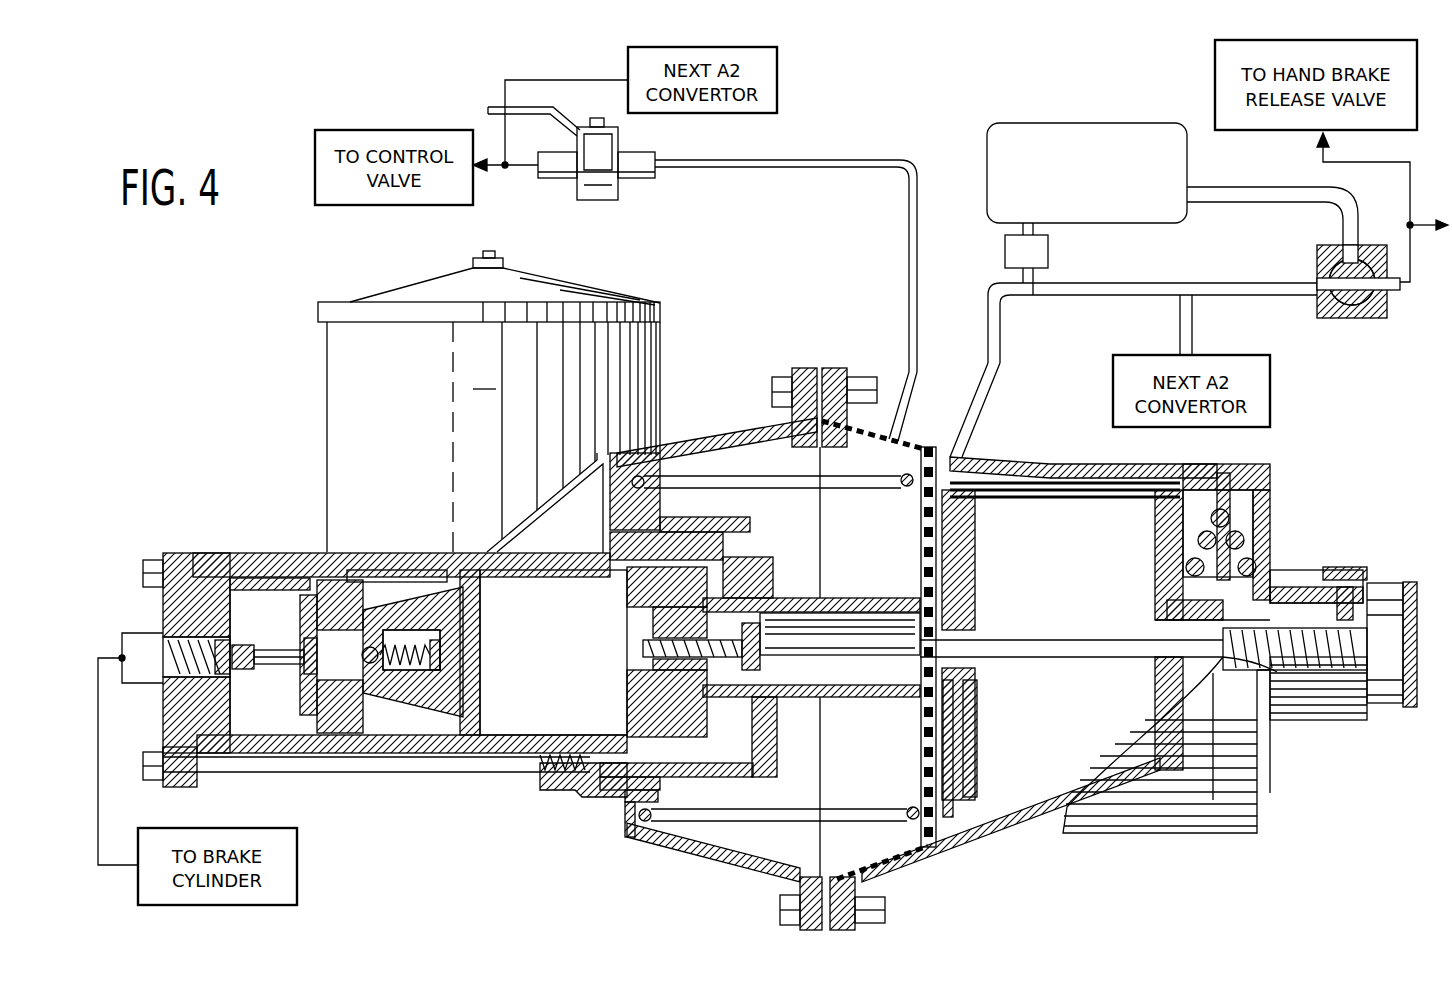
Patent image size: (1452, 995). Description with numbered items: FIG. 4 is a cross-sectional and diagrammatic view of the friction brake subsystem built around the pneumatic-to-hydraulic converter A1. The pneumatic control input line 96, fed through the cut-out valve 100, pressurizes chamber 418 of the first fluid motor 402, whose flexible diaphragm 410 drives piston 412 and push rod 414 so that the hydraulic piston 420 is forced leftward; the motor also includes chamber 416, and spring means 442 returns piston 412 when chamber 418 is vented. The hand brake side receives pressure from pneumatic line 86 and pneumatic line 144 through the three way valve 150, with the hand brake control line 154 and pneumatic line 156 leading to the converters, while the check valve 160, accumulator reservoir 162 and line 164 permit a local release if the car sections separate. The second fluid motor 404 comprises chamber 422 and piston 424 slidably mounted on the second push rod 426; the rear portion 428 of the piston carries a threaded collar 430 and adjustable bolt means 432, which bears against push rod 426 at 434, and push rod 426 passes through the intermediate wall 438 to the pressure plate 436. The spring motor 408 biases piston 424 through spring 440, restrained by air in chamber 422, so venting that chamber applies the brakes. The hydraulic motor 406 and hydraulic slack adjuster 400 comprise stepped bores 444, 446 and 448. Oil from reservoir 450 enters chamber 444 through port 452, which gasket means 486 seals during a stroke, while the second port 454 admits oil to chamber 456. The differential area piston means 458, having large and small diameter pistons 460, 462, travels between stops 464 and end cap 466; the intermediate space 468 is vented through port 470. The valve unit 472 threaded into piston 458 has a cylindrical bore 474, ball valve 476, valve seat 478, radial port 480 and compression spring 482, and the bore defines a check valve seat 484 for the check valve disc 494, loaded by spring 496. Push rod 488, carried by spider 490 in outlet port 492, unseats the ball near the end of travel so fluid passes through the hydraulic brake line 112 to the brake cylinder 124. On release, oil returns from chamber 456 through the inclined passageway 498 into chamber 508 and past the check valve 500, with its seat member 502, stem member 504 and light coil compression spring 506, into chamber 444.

The pneumatic line 86 is at (1322, 150).
The pneumatic control input line 96 is at (505, 162).
The cut-out valve 100 is at (618, 192).
The hydraulic brake line 112 is at (98, 835).
The brake cylinder 124 is at (326, 835).
The pneumatic line 144 is at (1432, 212).
The three way valve 150 is at (1317, 258).
The hand brake control line 154 is at (1000, 352).
The pneumatic line 156 is at (1180, 320).
The check valve 160 is at (1048, 256).
The accumulator reservoir 162 is at (1037, 130).
The line 164 is at (1235, 175).
The hydraulic slack adjuster 400 is at (253, 538).
The first fluid motor 402 is at (950, 543).
The second fluid motor 404 is at (1108, 453).
The hydraulic motor 406 is at (514, 740).
The spring motor 408 is at (1205, 476).
The flexible diaphragm 410 is at (903, 443).
The piston 412 is at (920, 531).
The push rod 414 is at (895, 605).
The chamber 416 is at (872, 771).
The chamber 418 is at (975, 800).
The hydraulic piston 420 is at (762, 662).
The chamber 422 is at (1128, 571).
The piston 424 is at (1176, 517).
The second push rod 426 is at (1125, 640).
The rear portion 428 is at (1294, 580).
The threaded collar 430 is at (1384, 593).
The adjustable bolt means 432 is at (1378, 705).
The bearing point 434 is at (1262, 720).
The pressure plate 436 is at (960, 600).
The intermediate wall 438 is at (973, 732).
The spring 440 is at (1262, 520).
The spring means 442 is at (800, 492).
The first hydraulic chamber 444 is at (557, 682).
The chamber 446 is at (470, 648).
The chamber 448 is at (240, 712).
The reservoir 450 is at (722, 304).
The port 452 is at (606, 548).
The second port 454 is at (746, 570).
The chamber 456 is at (760, 720).
The differential area reciprocal piston means 458 is at (386, 536).
The large diameter piston 460 is at (456, 536).
The small diameter piston 462 is at (312, 727).
The stops 464 is at (480, 604).
The end cap 466 is at (168, 725).
The intermediate space 468 is at (432, 735).
The port 470 is at (350, 725).
The valve unit 472 is at (325, 625).
The cylindrical bore 474 is at (318, 622).
The ball valve 476 is at (432, 641).
The valve seat 478 is at (366, 665).
The radial port 480 is at (396, 642).
The compression spring 482 is at (418, 672).
The check valve seat 484 is at (302, 672).
The gasket means 486 is at (626, 590).
The push rod 488 is at (247, 672).
The spider 490 is at (224, 622).
The outlet port 492 is at (217, 603).
The check valve disc 494 is at (232, 640).
The spring 496 is at (215, 698).
The inclined passageway 498 is at (626, 617).
The check valve 500 is at (620, 640).
The seat member 502 is at (634, 680).
The stem member 504 is at (682, 618).
The light coil compression spring 506 is at (762, 640).
The chamber 508 is at (625, 678).
The pneumatic-to-hydraulic converter A1 is at (489, 401).